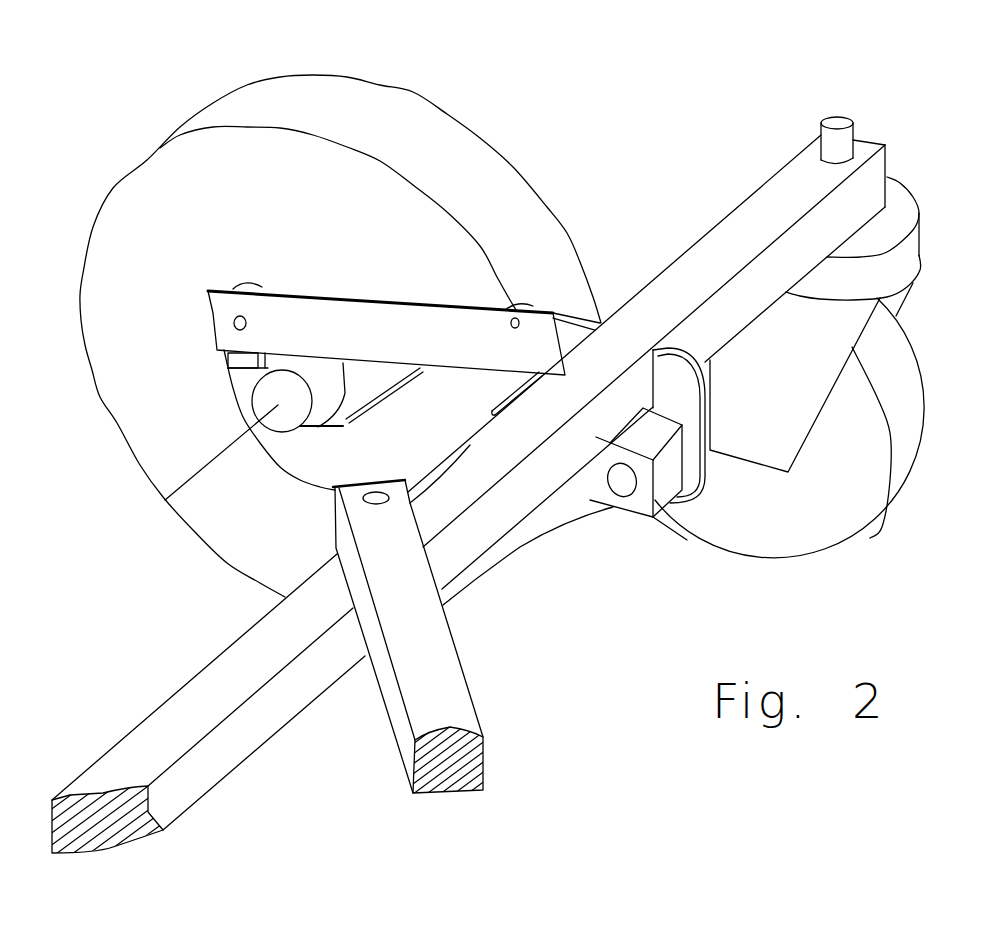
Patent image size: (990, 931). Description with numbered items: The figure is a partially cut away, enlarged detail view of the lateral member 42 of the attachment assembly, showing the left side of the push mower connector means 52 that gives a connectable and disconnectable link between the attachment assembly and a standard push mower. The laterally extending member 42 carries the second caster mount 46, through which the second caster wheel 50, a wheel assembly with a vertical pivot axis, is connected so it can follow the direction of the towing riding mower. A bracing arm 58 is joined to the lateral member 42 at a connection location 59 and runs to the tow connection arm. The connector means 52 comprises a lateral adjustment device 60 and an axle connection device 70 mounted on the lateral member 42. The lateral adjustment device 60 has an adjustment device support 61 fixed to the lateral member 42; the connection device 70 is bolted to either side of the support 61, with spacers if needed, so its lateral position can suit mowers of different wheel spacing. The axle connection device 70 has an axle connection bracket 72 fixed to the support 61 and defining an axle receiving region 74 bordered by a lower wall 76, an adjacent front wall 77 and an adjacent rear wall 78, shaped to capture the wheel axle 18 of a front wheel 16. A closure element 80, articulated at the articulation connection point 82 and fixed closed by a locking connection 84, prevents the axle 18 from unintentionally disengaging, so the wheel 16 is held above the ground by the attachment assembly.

The wheel 16 is at (373, 130).
The wheel axle 18 is at (163, 505).
The lateral member 42 is at (240, 661).
The second caster mount 46 is at (857, 140).
The second caster wheel 50 is at (828, 505).
The push mower connector means 52 is at (565, 207).
The bracing arm 58 is at (437, 660).
The connection location 59 is at (390, 500).
The lateral adjustment device 60 is at (610, 523).
The adjustment device support 61 is at (670, 487).
The axle connection device 70 is at (313, 267).
The axle connection bracket 72 is at (275, 440).
The axle receiving region 74 is at (355, 420).
The lower wall 76 is at (315, 427).
The front wall 77 is at (360, 405).
The rear wall 78 is at (230, 370).
The closure element 80 is at (345, 323).
The articulation connection point 82 is at (223, 317).
The locking connection 84 is at (537, 307).